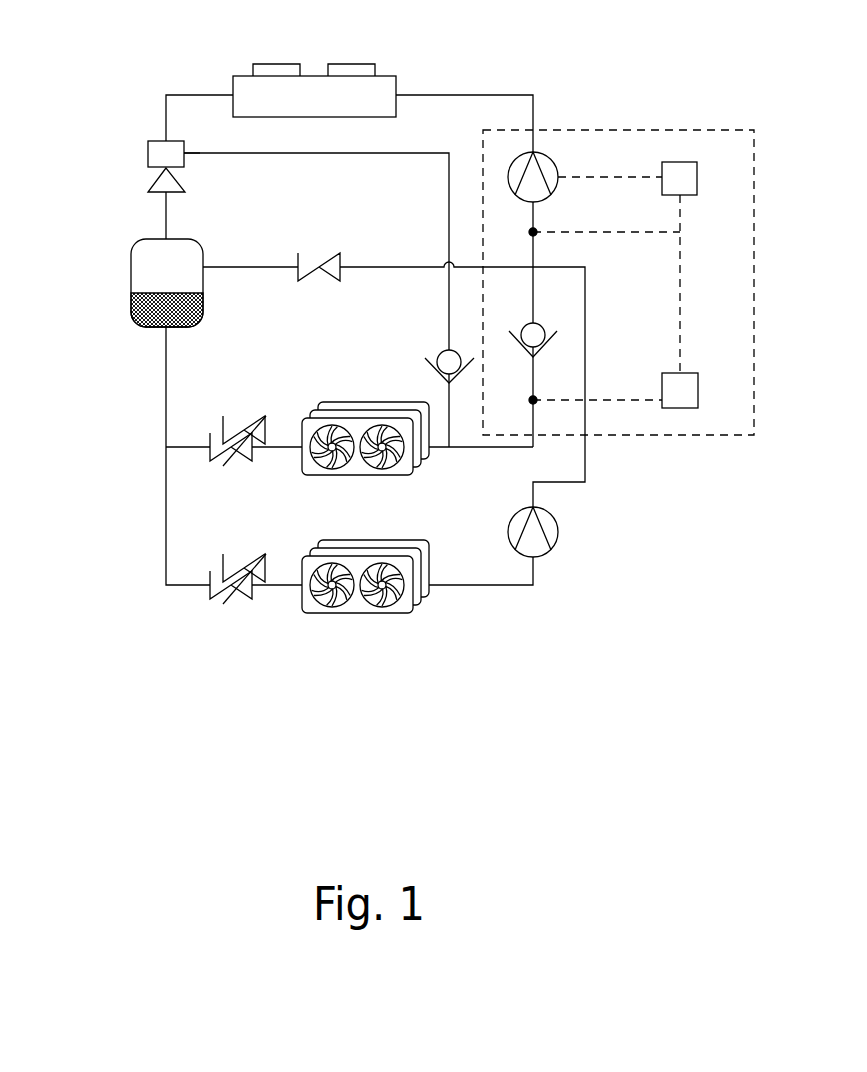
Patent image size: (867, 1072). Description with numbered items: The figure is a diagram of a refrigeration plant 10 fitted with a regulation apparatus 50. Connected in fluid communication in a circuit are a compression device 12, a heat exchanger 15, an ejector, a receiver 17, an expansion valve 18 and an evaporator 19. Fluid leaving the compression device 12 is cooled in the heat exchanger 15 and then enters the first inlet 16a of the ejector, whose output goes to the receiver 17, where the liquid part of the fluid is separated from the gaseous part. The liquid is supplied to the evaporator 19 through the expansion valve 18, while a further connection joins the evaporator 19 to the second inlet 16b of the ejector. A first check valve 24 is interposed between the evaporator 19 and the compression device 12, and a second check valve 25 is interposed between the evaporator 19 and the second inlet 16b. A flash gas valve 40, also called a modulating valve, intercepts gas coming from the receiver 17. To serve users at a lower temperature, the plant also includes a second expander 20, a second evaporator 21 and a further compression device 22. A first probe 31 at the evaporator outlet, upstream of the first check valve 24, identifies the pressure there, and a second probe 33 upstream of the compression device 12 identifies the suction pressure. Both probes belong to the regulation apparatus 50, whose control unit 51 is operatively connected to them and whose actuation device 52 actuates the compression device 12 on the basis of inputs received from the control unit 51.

The refrigeration plant 10 is at (100, 62).
The compression device 12 is at (550, 172).
The heat exchanger 15 is at (386, 82).
The first inlet 16a is at (165, 138).
The second inlet 16b is at (184, 155).
The receiver 17 is at (135, 265).
The expansion valve 18 is at (264, 418).
The evaporator 19 is at (407, 465).
The second expander 20 is at (264, 556).
The second evaporator 21 is at (407, 607).
The further compression device 22 is at (538, 540).
The first check valve 24 is at (536, 326).
The second check valve 25 is at (442, 355).
The first probe 31 is at (537, 395).
The second probe 33 is at (540, 230).
The flash gas valve 40 is at (302, 272).
The regulation apparatus 50 is at (641, 130).
The control unit 51 is at (690, 393).
The actuation device 52 is at (688, 181).